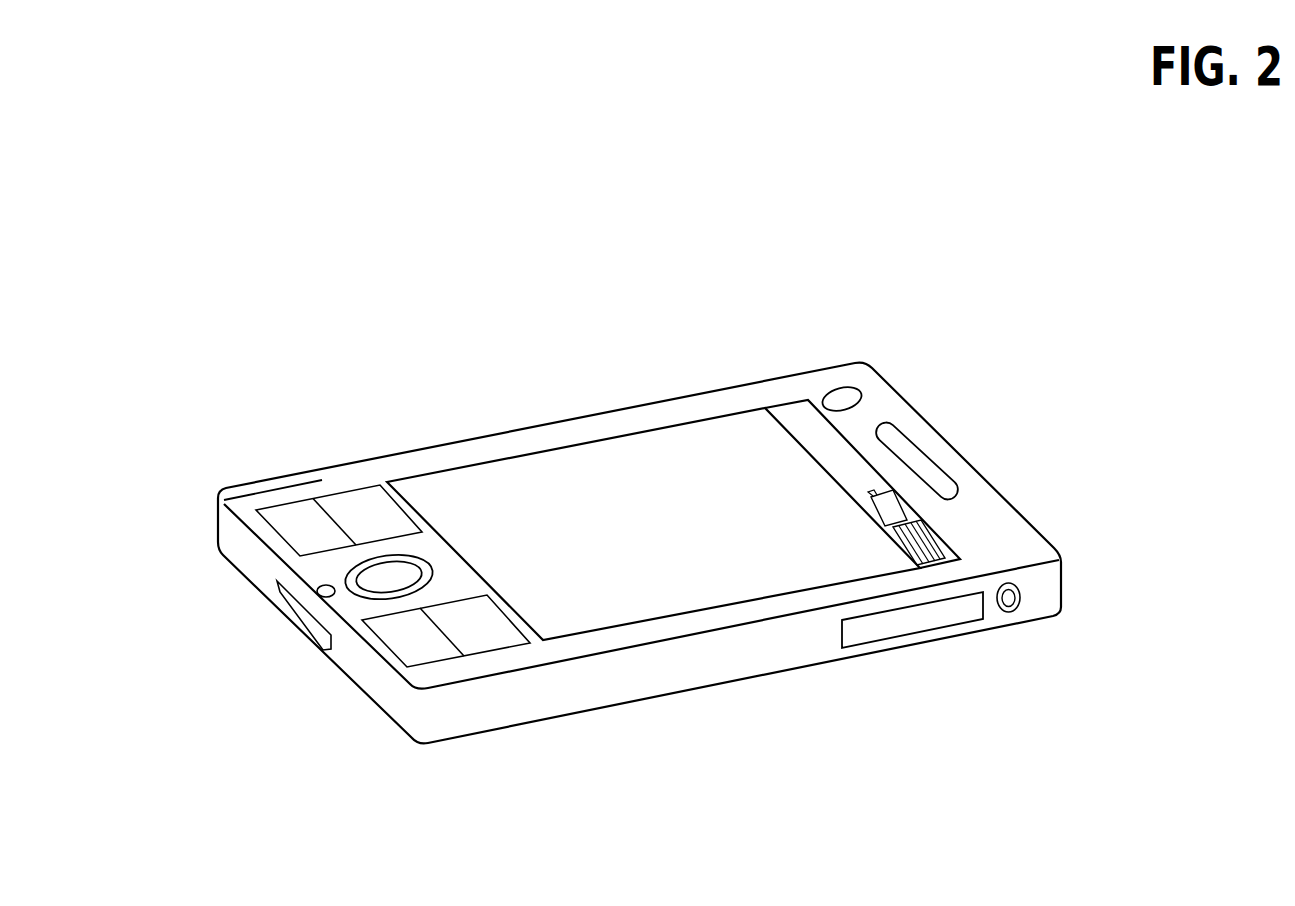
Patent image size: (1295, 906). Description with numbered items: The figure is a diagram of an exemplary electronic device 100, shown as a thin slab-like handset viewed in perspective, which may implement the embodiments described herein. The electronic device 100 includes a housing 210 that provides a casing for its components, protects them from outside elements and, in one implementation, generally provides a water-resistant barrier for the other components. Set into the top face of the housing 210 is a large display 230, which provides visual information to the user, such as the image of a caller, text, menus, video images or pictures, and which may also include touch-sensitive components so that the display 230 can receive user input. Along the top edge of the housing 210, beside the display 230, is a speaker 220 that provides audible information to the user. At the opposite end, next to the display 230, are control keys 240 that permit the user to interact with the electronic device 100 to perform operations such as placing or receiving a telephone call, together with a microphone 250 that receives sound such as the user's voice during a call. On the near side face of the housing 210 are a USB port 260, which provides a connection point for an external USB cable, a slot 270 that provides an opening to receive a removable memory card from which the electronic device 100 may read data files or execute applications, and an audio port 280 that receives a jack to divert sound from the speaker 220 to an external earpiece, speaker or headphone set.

The electronic device 100 is at (243, 235).
The housing 210 is at (678, 398).
The speaker 220 is at (923, 449).
The display 230 is at (531, 466).
The control keys 240 is at (340, 497).
The microphone 250 is at (318, 589).
The universal serial bus (USB) port 260 is at (280, 579).
The slot for removable memory card 270 is at (864, 632).
The audio port 280 is at (1004, 612).